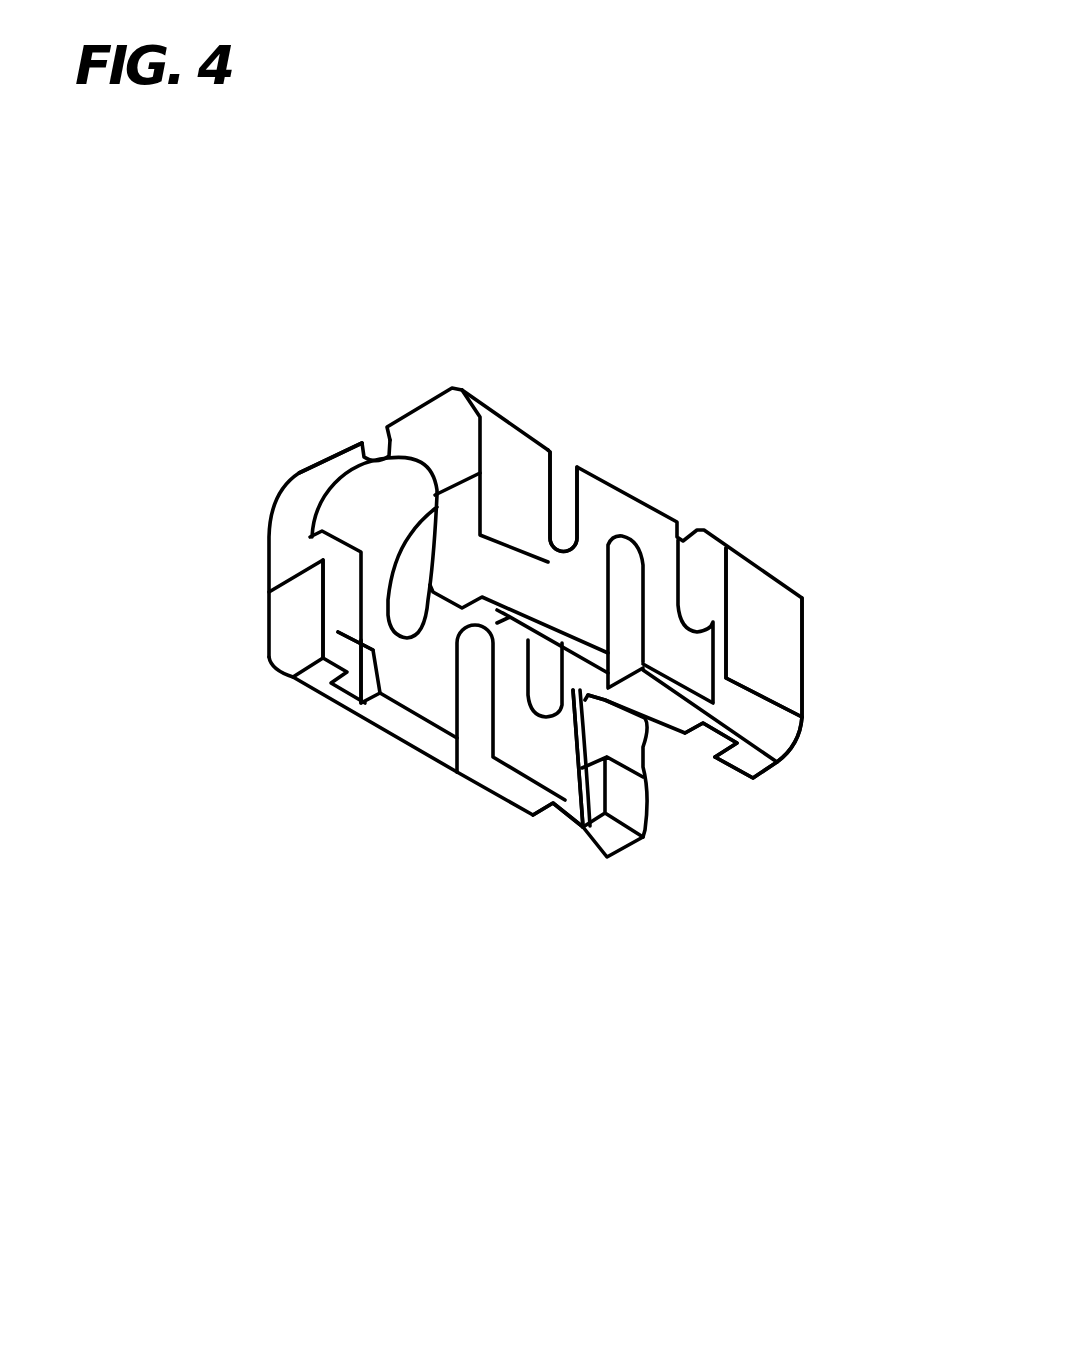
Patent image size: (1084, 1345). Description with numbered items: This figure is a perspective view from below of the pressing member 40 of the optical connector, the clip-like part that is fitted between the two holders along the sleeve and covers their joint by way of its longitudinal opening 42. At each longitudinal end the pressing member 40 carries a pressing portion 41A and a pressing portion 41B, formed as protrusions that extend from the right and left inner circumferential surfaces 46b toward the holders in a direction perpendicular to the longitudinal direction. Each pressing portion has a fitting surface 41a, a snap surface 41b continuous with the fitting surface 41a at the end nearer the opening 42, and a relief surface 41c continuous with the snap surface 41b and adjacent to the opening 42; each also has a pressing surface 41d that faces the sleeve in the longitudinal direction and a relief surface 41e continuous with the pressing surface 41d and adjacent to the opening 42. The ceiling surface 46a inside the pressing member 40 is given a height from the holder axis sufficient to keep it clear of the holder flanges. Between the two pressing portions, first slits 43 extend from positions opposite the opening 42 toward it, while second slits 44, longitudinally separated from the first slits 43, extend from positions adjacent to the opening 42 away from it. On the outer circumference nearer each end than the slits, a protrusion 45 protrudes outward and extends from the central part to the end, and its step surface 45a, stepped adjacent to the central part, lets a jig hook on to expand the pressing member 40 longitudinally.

The pressing member 40 is at (461, 432).
The pressing portion 41A is at (438, 507).
The pressing portion 41B is at (743, 745).
The fitting surface 41a is at (617, 730).
The snap surface 41b is at (590, 793).
The relief surface 41c is at (620, 805).
The pressing surface 41d is at (588, 742).
The relief surface 41e is at (592, 795).
The opening 42 is at (680, 787).
The first slit 43 is at (698, 592).
The second slit 44 is at (578, 512).
The protrusion 45 is at (770, 618).
The step surface 45a is at (717, 612).
The ceiling surface 46a is at (383, 482).
The inner circumferential surface 46b is at (589, 800).